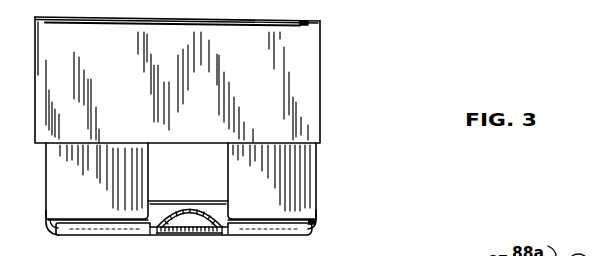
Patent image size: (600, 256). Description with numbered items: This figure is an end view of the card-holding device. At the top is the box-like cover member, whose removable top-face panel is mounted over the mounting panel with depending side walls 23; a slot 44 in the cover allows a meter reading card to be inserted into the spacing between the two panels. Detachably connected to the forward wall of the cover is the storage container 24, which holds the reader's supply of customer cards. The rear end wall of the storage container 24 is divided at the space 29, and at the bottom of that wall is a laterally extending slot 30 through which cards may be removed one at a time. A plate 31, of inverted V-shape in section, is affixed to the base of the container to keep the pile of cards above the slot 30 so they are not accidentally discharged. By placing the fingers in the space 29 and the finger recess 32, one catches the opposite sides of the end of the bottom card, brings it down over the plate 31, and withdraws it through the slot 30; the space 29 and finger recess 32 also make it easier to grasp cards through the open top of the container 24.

The side walls 23 is at (322, 82).
The slot 44 is at (303, 24).
The storage container 24 is at (318, 184).
The space 29 is at (177, 152).
The plate 31 is at (206, 202).
The finger recess 32 is at (186, 235).
The slot 30 is at (314, 228).